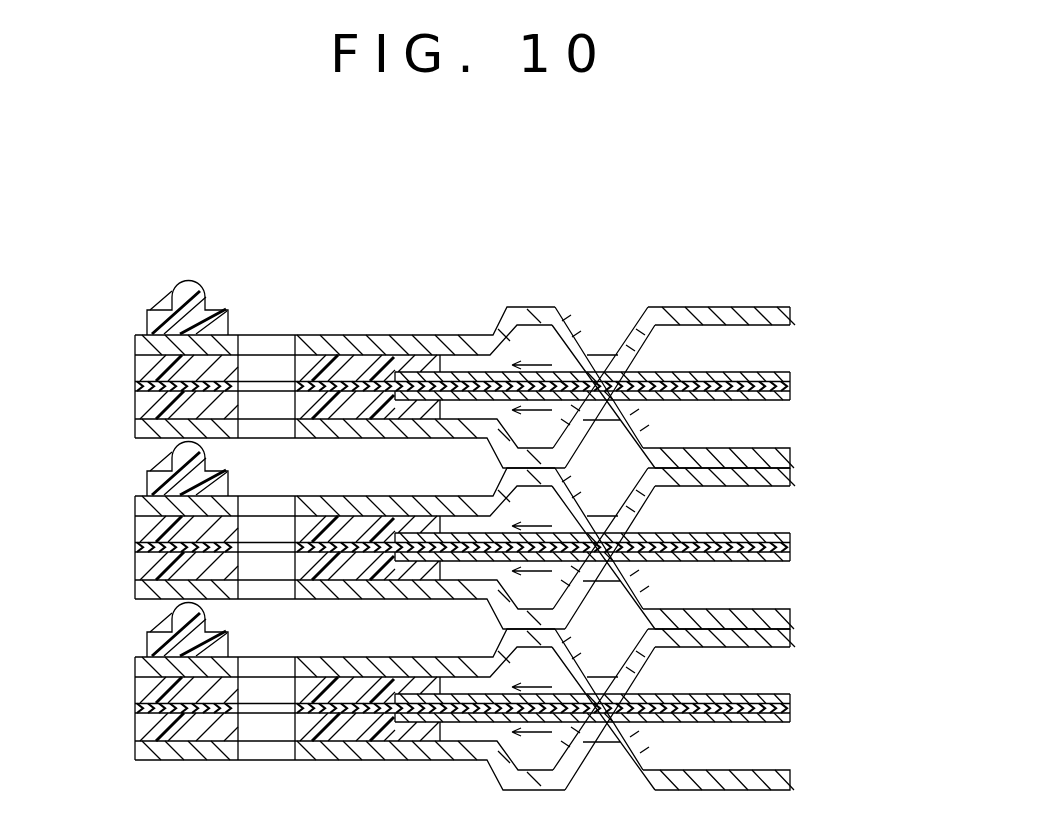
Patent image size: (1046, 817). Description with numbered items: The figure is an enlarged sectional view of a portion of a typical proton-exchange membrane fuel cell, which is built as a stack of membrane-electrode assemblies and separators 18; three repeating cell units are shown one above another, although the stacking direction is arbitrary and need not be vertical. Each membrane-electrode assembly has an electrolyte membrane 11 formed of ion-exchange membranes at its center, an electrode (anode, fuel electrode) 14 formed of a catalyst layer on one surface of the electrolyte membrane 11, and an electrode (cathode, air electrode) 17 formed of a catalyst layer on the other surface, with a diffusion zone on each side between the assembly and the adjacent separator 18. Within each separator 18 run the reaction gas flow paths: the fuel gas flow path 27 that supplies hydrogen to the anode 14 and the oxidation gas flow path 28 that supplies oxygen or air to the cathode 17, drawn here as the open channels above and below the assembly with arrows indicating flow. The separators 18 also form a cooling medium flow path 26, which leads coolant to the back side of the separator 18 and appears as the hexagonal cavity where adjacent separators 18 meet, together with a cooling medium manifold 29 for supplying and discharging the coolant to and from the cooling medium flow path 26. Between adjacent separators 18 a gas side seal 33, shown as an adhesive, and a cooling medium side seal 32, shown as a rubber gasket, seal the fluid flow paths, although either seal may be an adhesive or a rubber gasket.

The electrolyte membrane 11 is at (787, 388).
The electrode (anode, fuel electrode) 14 is at (787, 378).
The electrode (cathode, air electrode) 17 is at (787, 397).
The separator 18 is at (768, 318).
The cooling medium flow path 26 is at (602, 337).
The fuel gas flow path 27 is at (750, 355).
The oxidation gas flow path 28 is at (750, 428).
The cooling medium manifold 29 is at (248, 728).
The cooling medium side seal 32 is at (175, 295).
The gas side seal 33 is at (157, 407).